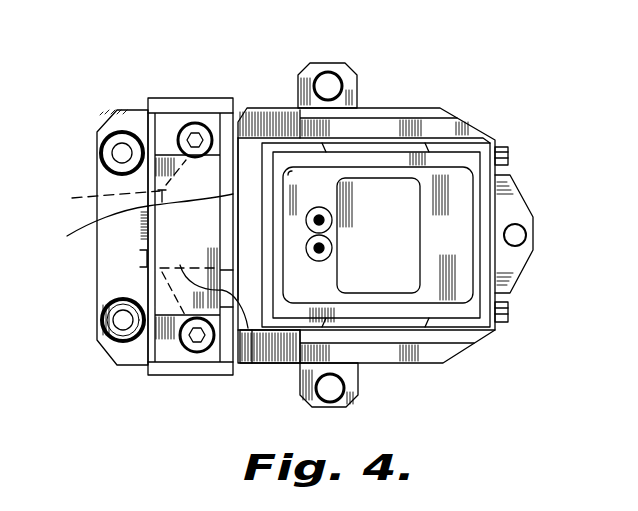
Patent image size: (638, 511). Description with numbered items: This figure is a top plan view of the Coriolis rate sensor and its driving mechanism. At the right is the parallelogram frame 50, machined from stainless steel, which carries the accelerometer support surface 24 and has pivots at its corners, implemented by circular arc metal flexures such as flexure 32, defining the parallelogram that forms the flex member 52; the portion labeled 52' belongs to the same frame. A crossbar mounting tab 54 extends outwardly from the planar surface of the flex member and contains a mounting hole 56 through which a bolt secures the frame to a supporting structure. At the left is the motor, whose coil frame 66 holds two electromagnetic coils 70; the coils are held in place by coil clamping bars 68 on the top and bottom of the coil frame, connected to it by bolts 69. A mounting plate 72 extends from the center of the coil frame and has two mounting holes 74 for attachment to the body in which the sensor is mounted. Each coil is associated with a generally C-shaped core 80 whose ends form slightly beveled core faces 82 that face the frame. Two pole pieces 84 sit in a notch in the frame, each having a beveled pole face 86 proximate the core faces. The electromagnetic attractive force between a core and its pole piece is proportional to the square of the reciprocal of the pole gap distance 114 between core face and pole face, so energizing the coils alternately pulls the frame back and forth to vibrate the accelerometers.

The accelerometer support surface 24 is at (314, 197).
The circular arc metal flexure 32 is at (285, 364).
The parallelogram frame 50 is at (503, 347).
The flex member 52 is at (366, 261).
The upper housing frame portion 52' is at (379, 222).
The crossbar mounting tab 54 is at (360, 97).
The mounting hole 56 is at (327, 83).
The coil frame 66 is at (213, 377).
The coil clamping bar 68 is at (170, 361).
The bolt 69 is at (188, 157).
The electromagnetic coil 70 is at (147, 244).
The mounting plate 72 is at (114, 288).
The mounting hole 74 is at (100, 138).
The core 80 is at (133, 237).
The core face 82 is at (250, 150).
The pole piece 84 is at (250, 284).
The pole face 86 is at (237, 165).
The pole gap distance 114 is at (132, 261).